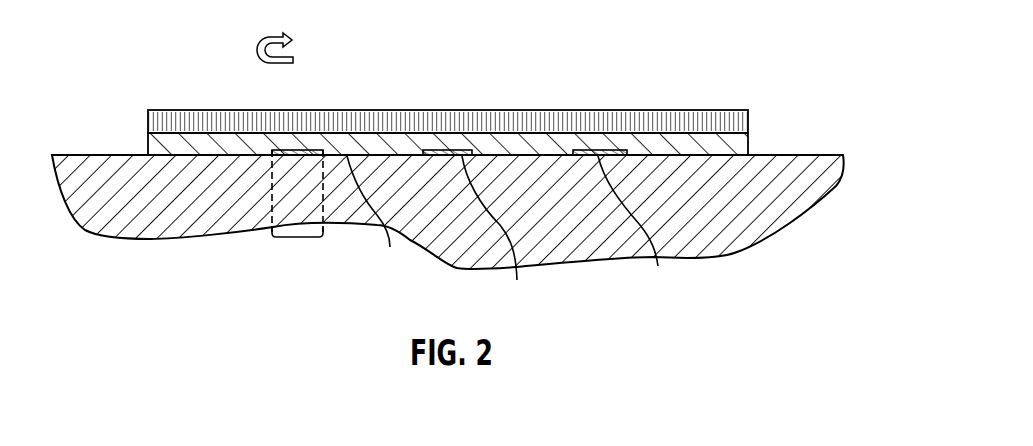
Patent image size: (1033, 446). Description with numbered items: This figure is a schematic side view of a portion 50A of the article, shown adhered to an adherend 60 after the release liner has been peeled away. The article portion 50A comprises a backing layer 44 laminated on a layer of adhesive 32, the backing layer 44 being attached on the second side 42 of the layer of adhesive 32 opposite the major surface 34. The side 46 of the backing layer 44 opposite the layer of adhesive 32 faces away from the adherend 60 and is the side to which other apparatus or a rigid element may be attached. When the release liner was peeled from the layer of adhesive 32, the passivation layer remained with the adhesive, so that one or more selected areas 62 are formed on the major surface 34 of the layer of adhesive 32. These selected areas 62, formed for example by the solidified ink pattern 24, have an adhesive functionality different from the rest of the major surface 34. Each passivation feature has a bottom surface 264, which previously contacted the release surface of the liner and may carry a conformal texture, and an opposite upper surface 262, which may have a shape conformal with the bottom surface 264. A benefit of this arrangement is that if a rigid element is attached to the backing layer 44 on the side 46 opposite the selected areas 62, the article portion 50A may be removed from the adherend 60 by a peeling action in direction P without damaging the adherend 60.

The portion of the article 50A is at (456, 105).
The layer of adhesive 32 is at (257, 148).
The upper surface 262 is at (468, 148).
The side opposite the layer of adhesive 46 is at (624, 110).
The backing layer 44 is at (484, 115).
The second side 42 is at (750, 148).
The adherend 60 is at (760, 205).
The selected areas 62 is at (298, 237).
The major surface 34 is at (377, 219).
The bottom surface 264 is at (501, 235).
The solidified ink pattern 24 is at (648, 229).
The peeling direction P is at (283, 43).